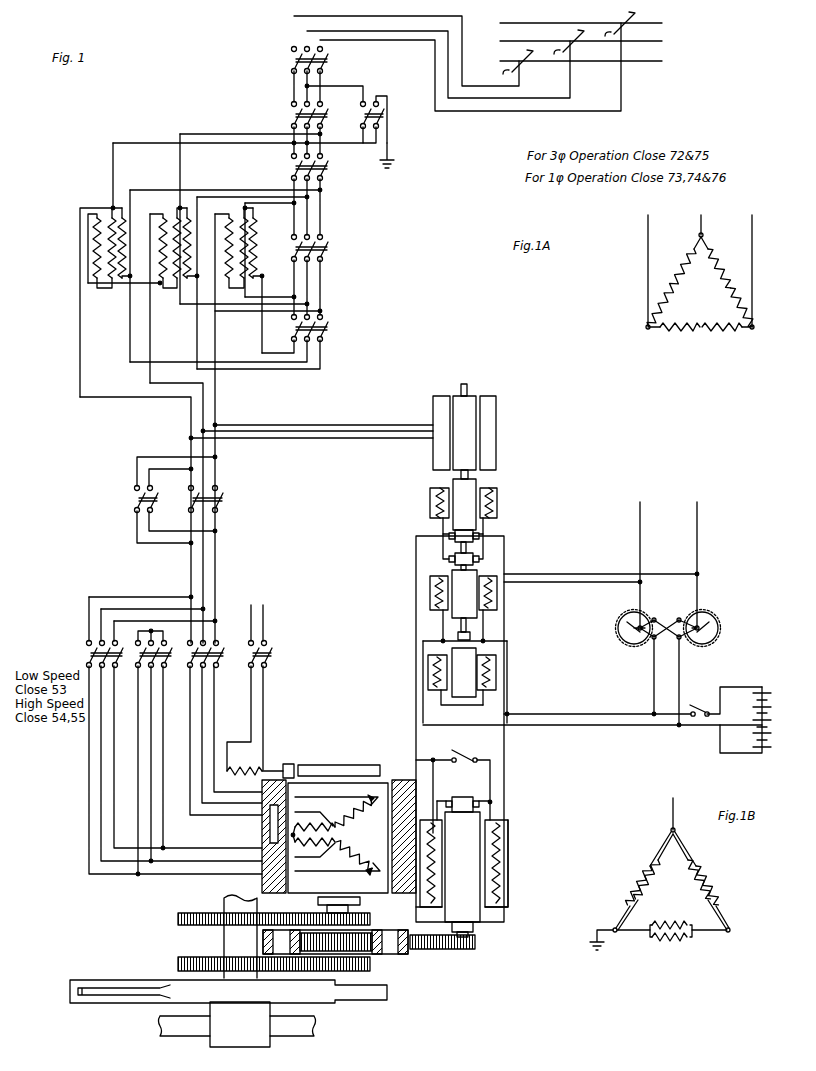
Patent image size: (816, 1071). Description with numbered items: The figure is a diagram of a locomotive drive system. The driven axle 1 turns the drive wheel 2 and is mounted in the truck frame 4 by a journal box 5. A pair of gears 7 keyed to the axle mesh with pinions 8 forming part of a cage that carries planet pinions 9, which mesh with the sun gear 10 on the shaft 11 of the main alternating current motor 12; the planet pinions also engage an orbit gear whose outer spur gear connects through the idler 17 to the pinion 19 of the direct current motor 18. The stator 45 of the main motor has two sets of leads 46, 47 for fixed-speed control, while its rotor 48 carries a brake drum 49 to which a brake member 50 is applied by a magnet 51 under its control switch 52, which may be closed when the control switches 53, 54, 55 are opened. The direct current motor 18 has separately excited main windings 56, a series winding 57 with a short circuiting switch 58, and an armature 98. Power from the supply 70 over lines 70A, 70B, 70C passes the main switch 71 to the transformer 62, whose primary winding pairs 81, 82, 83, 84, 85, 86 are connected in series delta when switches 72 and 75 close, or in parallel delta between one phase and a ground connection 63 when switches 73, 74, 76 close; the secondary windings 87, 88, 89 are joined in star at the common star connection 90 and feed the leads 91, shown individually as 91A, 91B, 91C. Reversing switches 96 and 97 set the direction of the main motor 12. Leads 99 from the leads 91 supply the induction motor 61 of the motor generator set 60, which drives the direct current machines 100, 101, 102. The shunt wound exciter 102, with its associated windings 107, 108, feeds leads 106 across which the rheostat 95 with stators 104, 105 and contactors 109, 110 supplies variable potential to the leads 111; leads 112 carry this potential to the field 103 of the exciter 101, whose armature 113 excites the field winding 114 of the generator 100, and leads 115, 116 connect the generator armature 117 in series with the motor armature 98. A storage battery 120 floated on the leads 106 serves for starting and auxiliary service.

In FIG. 1, the driven axle 1 is at (222, 905).
In FIG. 1, the drive wheel 2 is at (167, 1000).
In FIG. 1, the truck frame 4 is at (295, 1030).
In FIG. 1, the journal box 5 is at (232, 1033).
In FIG. 1, the gears 7 is at (178, 965).
In FIG. 1, the pinions 8 is at (372, 920).
In FIG. 1, the planet pinions 9 is at (315, 930).
In FIG. 1, the sun gear 10 is at (340, 948).
In FIG. 1, the shaft 11 is at (350, 911).
In FIG. 1, the main alternating current motor 12 is at (330, 765).
In FIG. 1, the idler 17 is at (438, 950).
In FIG. 1, the direct current motor 18 is at (509, 870).
In FIG. 1, the pinion 19 is at (478, 943).
In FIG. 1, the stator 45 is at (268, 833).
In FIG. 1, the leads 46 is at (175, 873).
In FIG. 1, the leads 47 is at (207, 743).
In FIG. 1, the rotor 48 is at (338, 803).
In FIG. 1, the brake drum 49 is at (316, 763).
In FIG. 1, the brake member 50 is at (288, 762).
In FIG. 1, the magnet 51 is at (248, 766).
In FIG. 1, the control switch 52 is at (250, 636).
In FIG. 1, the control switch 53 is at (93, 632).
In FIG. 1, the control switch 54 is at (146, 648).
In FIG. 1, the control switch 55 is at (198, 654).
In FIG. 1, the main windings 56 is at (505, 846).
In FIG. 1, the series winding 57 is at (486, 836).
In FIG. 1, the short circuiting switch 58 is at (478, 758).
In FIG. 1, the motor generator set 60 is at (507, 474).
In FIG. 1, the induction motor 61 is at (487, 388).
In FIG. 1, the transformer 62 is at (97, 173).
In FIG. 1, the ground 63 is at (396, 155).
In FIG. 1B, the ground 63 is at (589, 937).
In FIG. 1, the power supply 70 is at (228, 52).
In FIG. 1, the supply line A 70A is at (307, 31).
In FIG. 1A, the supply line A 70A is at (702, 216).
In FIG. 1B, the supply line A 70A is at (654, 815).
In FIG. 1, the supply line B 70B is at (294, 16).
In FIG. 1A, the supply line B 70B is at (650, 261).
In FIG. 1, the supply line C 70C is at (320, 42).
In FIG. 1A, the supply line C 70C is at (754, 261).
In FIG. 1, the main switch 71 is at (330, 60).
In FIG. 1, the switch 72 is at (322, 115).
In FIG. 1, the switch 73 is at (388, 119).
In FIG. 1, the switch 74 is at (326, 168).
In FIG. 1, the switch 75 is at (323, 247).
In FIG. 1, the switch 76 is at (323, 328).
In FIG. 1, the primary winding 81 is at (256, 218).
In FIG. 1A, the primary winding 81 is at (726, 336).
In FIG. 1B, the primary winding 81 is at (671, 918).
In FIG. 1, the primary winding 82 is at (256, 238).
In FIG. 1A, the primary winding 82 is at (675, 336).
In FIG. 1B, the primary winding 82 is at (671, 944).
In FIG. 1, the primary winding 83 is at (190, 222).
In FIG. 1A, the primary winding 83 is at (667, 307).
In FIG. 1B, the primary winding 83 is at (645, 882).
In FIG. 1, the primary winding 84 is at (190, 240).
In FIG. 1A, the primary winding 84 is at (682, 263).
In FIG. 1B, the primary winding 84 is at (638, 880).
In FIG. 1, the primary winding 85 is at (124, 222).
In FIG. 1A, the primary winding 85 is at (721, 263).
In FIG. 1B, the primary winding 85 is at (700, 882).
In FIG. 1, the primary winding 86 is at (124, 243).
In FIG. 1A, the primary winding 86 is at (733, 307).
In FIG. 1B, the primary winding 86 is at (706, 880).
In FIG. 1, the secondary winding 87 is at (95, 258).
In FIG. 1, the secondary winding 88 is at (190, 260).
In FIG. 1, the secondary winding 89 is at (256, 260).
In FIG. 1, the common star connection 90 is at (110, 284).
In FIG. 1, the leads 91 is at (263, 402).
In FIG. 1, the conductor 91A is at (219, 412).
In FIG. 1, the conductor 91B is at (218, 387).
In FIG. 1, the conductor 91C is at (191, 411).
In FIG. 1, the rheostat 95 is at (710, 590).
In FIG. 1, the switch 96 is at (161, 500).
In FIG. 1, the switch 97 is at (221, 499).
In FIG. 1, the armature 98 is at (482, 886).
In FIG. 1, the leads 99 is at (352, 425).
In FIG. 1, the generator 100 is at (498, 506).
In FIG. 1, the exciter 101 is at (512, 603).
In FIG. 1, the exciter 102 is at (514, 660).
In FIG. 1, the field windings 103 is at (490, 582).
In FIG. 1, the rheostat winding 104 is at (622, 616).
In FIG. 1, the rheostat winding 105 is at (718, 618).
In FIG. 1, the leads 106 is at (585, 724).
In FIG. 1, the coil 107 is at (423, 688).
In FIG. 1, the coil 108 is at (510, 696).
In FIG. 1, the contactor 109 is at (630, 648).
In FIG. 1, the contactor 110 is at (700, 650).
In FIG. 1, the leads 111 is at (692, 512).
In FIG. 1, the leads 112 is at (566, 578).
In FIG. 1, the armature 113 is at (480, 572).
In FIG. 1, the field winding 114 is at (430, 502).
In FIG. 1, the leads 115 is at (416, 603).
In FIG. 1, the leads 116 is at (505, 628).
In FIG. 1, the armature 117 is at (460, 522).
In FIG. 1, the storage battery 120 is at (770, 710).